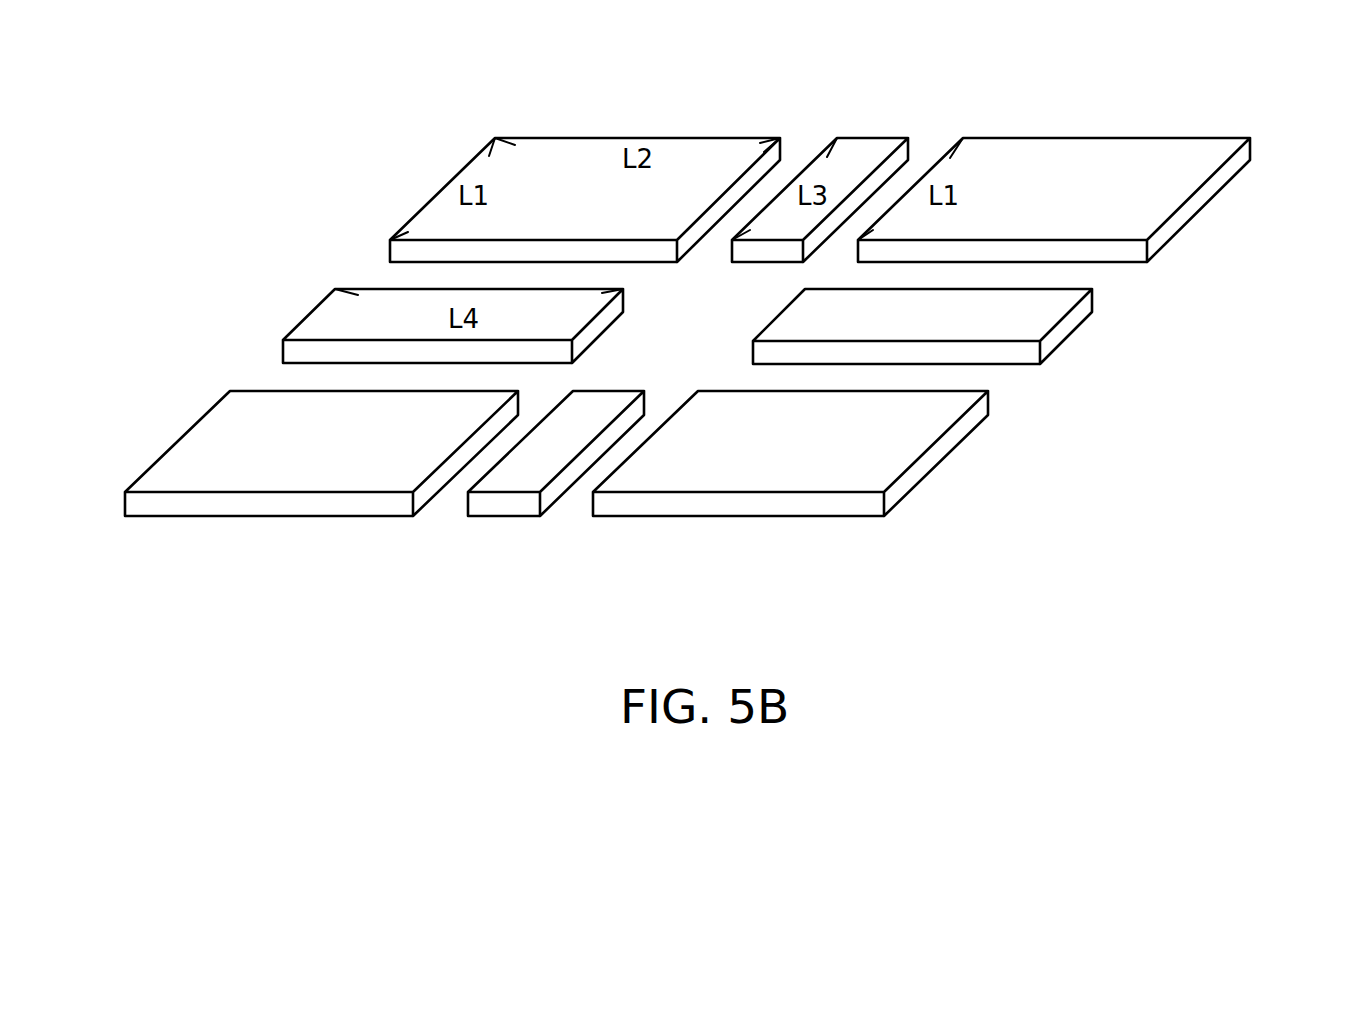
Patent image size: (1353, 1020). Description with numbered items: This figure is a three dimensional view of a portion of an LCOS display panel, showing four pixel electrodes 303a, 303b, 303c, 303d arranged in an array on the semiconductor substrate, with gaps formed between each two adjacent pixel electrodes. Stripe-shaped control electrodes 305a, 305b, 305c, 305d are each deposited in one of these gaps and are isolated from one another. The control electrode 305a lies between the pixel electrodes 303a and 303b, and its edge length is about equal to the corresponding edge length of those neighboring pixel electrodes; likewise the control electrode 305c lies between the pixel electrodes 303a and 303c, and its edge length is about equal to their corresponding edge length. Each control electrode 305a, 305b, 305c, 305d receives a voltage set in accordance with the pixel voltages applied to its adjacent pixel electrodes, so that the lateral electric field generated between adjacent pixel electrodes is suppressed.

The pixel electrode 303a is at (578, 152).
The pixel electrode 303b is at (1183, 182).
The pixel electrode 303c is at (192, 440).
The pixel electrode 303d is at (920, 435).
The control electrode 305a is at (862, 148).
The control electrode 305b is at (512, 477).
The control electrode 305c is at (320, 315).
The control electrode 305d is at (1045, 317).